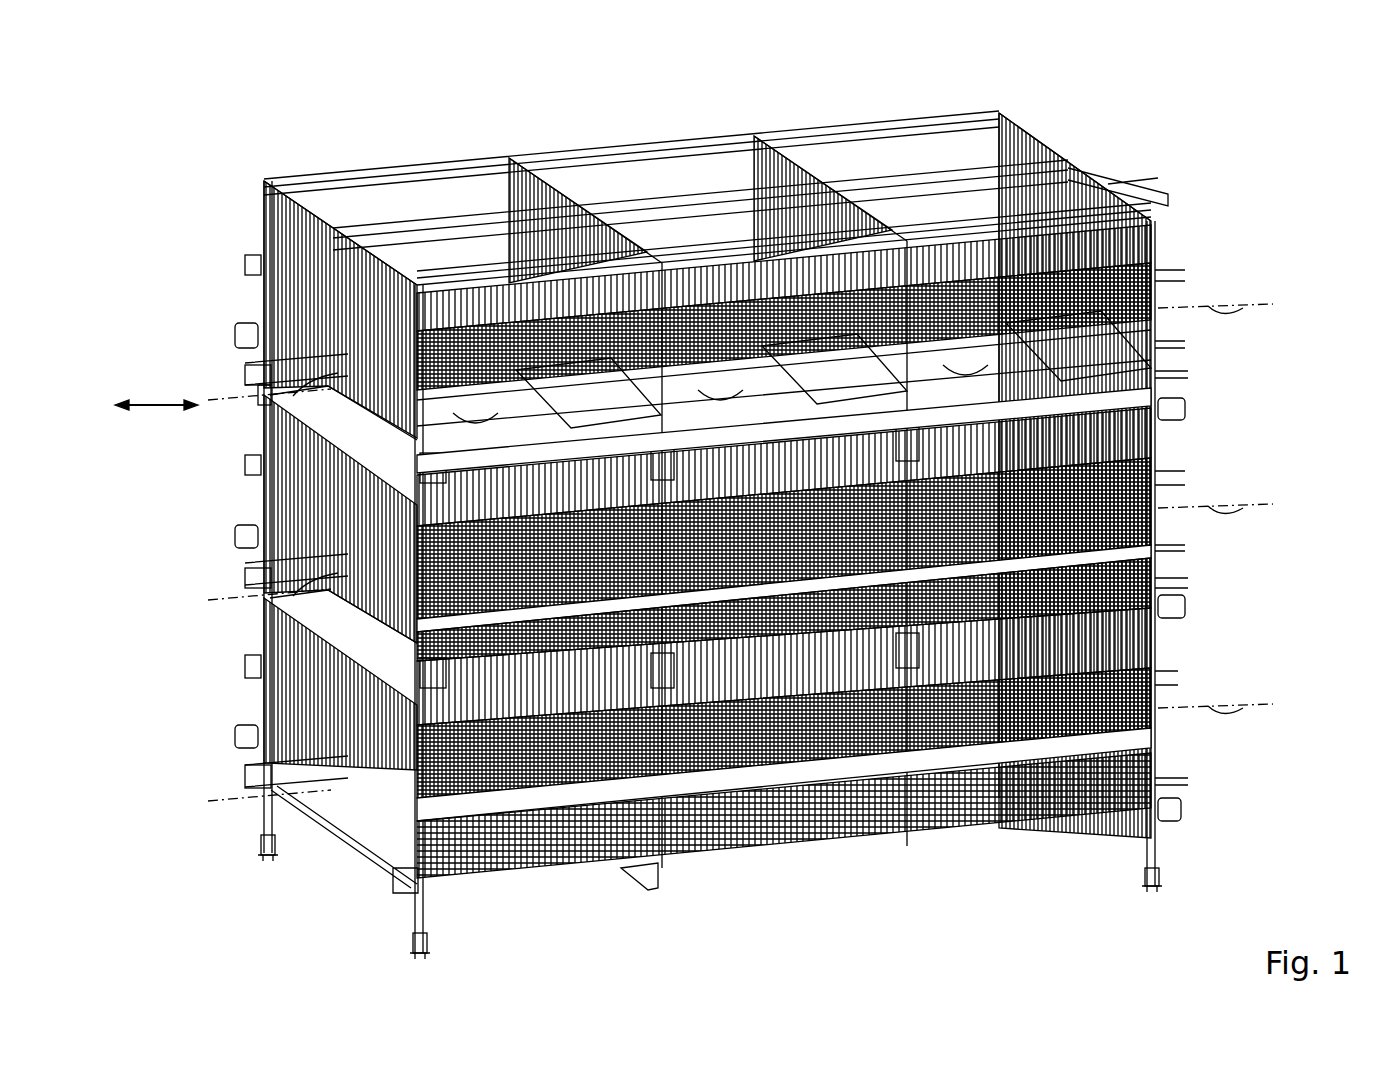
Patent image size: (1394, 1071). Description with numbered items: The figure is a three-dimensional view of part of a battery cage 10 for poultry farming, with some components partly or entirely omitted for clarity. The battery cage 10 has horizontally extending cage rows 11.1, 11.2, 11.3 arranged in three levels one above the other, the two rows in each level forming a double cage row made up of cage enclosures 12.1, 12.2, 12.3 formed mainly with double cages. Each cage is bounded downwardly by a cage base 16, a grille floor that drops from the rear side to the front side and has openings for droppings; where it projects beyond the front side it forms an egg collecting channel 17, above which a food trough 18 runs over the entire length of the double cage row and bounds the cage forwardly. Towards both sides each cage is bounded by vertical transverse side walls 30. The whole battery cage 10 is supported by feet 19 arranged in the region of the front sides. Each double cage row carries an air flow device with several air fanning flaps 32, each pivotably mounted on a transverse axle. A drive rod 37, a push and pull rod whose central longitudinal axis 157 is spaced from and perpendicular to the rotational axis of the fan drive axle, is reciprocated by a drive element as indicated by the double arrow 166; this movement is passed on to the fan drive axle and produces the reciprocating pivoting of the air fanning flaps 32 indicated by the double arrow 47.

The battery cage 10 is at (1290, 197).
The cage row 11.1 is at (874, 742).
The cage row 11.2 is at (1190, 444).
The cage row 11.3 is at (874, 270).
The cage enclosure 12.1 is at (226, 691).
The cage enclosure 12.2 is at (226, 483).
The cage enclosure 12.3 is at (226, 283).
The cage base 16 is at (789, 838).
The egg collecting channel 17 is at (977, 828).
The food trough 18 is at (697, 838).
The feet 19 is at (253, 846).
The transverse side wall 30 is at (312, 208).
The air fanning flap 32 is at (445, 290).
The drive rod 37 is at (285, 388).
The double arrow 47 is at (495, 340).
The central longitudinal axis 157 is at (1239, 501).
The double arrow 166 is at (152, 390).